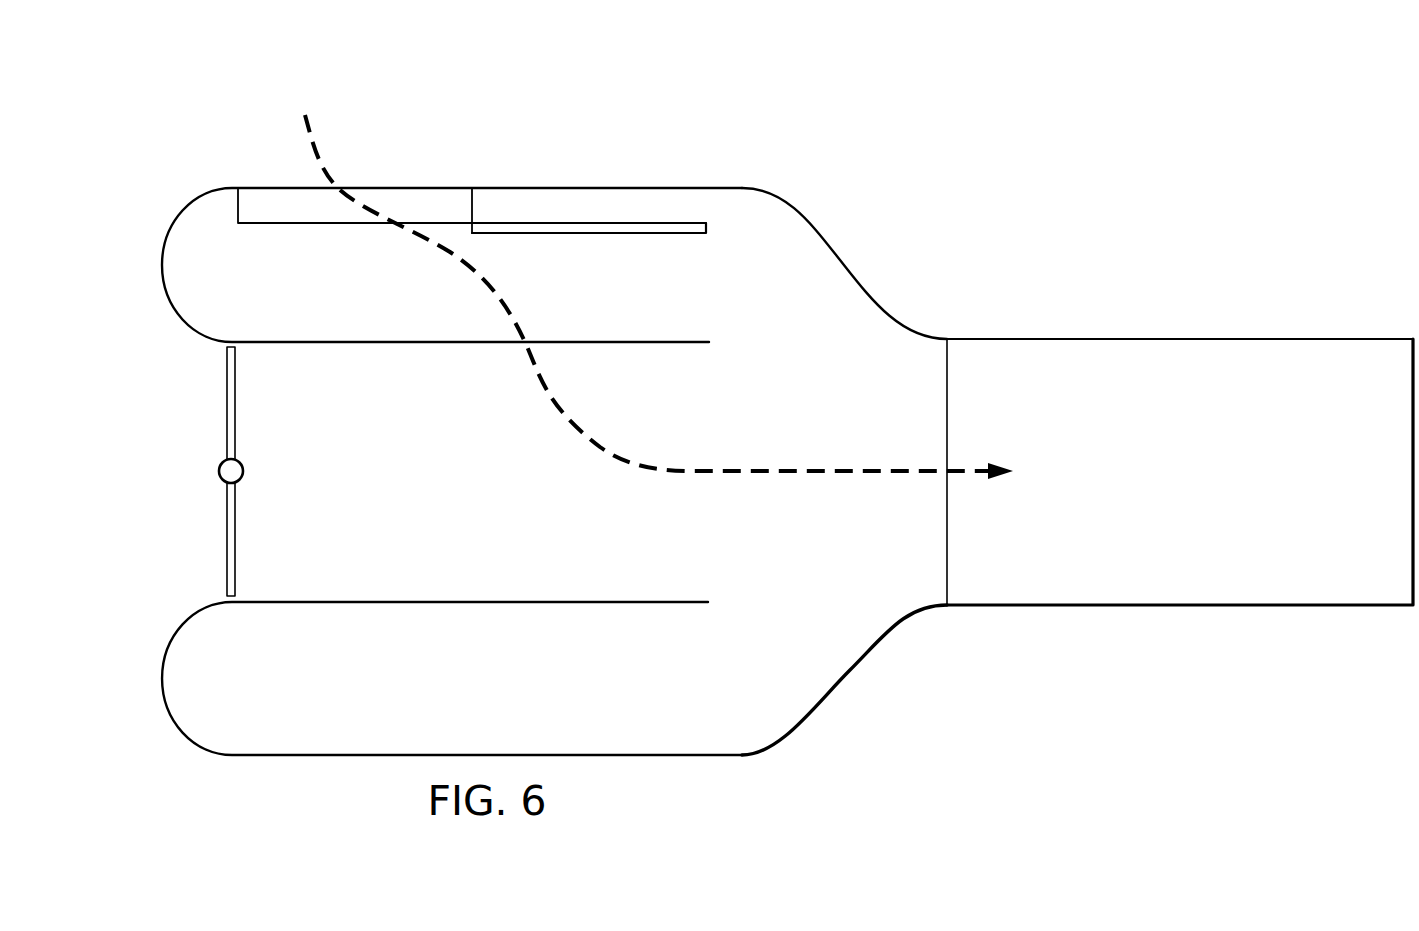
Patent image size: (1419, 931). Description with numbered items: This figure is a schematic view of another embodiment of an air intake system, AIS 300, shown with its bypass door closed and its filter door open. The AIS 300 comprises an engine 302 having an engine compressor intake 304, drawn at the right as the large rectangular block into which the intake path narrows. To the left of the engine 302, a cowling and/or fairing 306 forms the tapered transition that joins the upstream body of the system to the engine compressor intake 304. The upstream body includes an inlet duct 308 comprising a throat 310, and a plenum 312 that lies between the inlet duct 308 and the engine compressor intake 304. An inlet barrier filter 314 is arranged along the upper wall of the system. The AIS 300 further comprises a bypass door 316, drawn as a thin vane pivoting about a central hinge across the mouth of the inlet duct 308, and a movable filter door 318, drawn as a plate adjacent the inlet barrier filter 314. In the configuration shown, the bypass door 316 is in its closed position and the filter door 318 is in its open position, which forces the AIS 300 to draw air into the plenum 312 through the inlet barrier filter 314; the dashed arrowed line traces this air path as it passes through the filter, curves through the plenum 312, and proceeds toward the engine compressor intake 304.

The air intake system 300 is at (922, 112).
The engine 302 is at (1134, 337).
The engine compressor intake 304 is at (947, 407).
The cowling and/or fairing 306 is at (843, 258).
The inlet duct 308 is at (160, 250).
The throat 310 is at (355, 572).
The plenum 312 is at (772, 252).
The inlet barrier filter 314 is at (432, 197).
The bypass door 316 is at (218, 470).
The movable filter door 318 is at (676, 235).